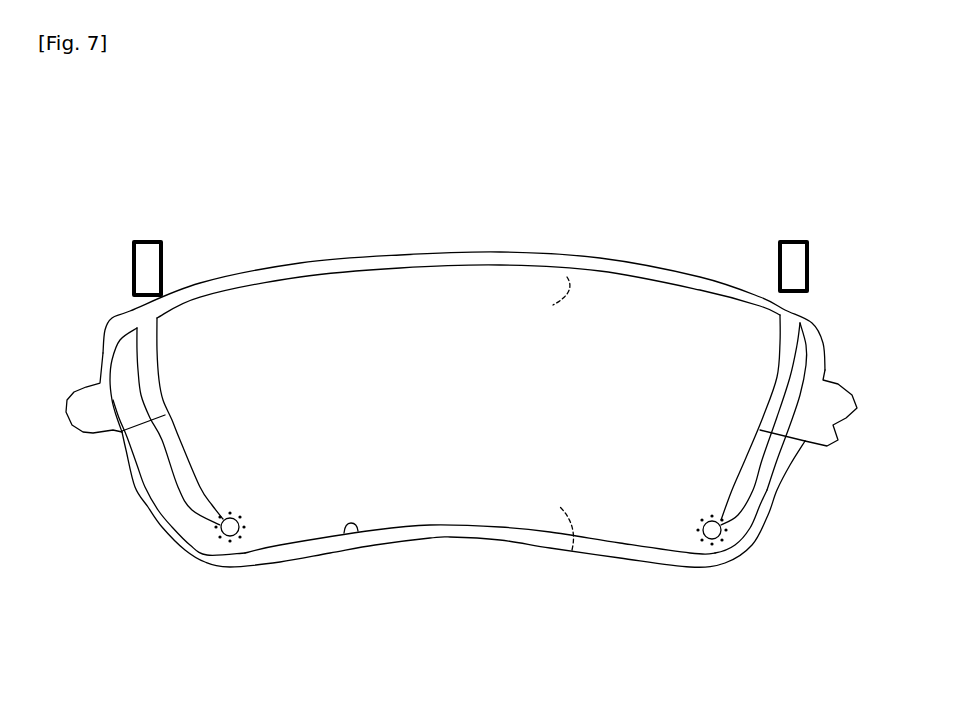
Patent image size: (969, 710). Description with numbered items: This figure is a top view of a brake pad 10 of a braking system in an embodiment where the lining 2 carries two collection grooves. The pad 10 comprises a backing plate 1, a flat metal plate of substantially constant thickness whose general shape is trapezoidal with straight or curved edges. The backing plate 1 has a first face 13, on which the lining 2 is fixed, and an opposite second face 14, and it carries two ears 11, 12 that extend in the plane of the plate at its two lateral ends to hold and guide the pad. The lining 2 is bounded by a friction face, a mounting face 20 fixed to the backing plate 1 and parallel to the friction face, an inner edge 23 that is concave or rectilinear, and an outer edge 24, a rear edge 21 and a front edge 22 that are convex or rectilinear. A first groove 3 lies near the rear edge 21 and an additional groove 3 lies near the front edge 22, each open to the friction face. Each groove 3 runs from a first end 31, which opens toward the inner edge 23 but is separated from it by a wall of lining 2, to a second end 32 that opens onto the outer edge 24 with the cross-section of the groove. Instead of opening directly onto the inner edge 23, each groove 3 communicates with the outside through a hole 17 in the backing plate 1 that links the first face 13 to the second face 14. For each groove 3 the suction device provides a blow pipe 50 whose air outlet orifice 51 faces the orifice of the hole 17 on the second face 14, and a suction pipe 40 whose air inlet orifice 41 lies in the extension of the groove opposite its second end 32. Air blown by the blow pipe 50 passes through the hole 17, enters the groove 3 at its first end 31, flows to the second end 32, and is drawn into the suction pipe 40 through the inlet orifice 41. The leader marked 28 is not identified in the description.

The backing plate 1 is at (463, 536).
The lining 2 is at (700, 325).
The collection groove 3 is at (113, 428).
The brake pad 10 is at (172, 152).
The ear 11 is at (820, 405).
The ear 12 is at (90, 407).
The first face 13 is at (350, 527).
The second face 14 is at (572, 550).
The hole 17 is at (245, 522).
The mounting face 20 is at (567, 277).
The rear edge 21 is at (777, 488).
The front edge 22 is at (152, 493).
The inner edge 23 is at (395, 530).
The outer edge 24 is at (513, 266).
The lining surface 28 is at (330, 360).
The first end 31 is at (231, 516).
The second end 32 is at (148, 331).
The suction pipe 40 is at (148, 263).
The air inlet orifice 41 is at (137, 310).
The blow pipe 50 is at (200, 533).
The air outlet orifice 51 is at (231, 538).